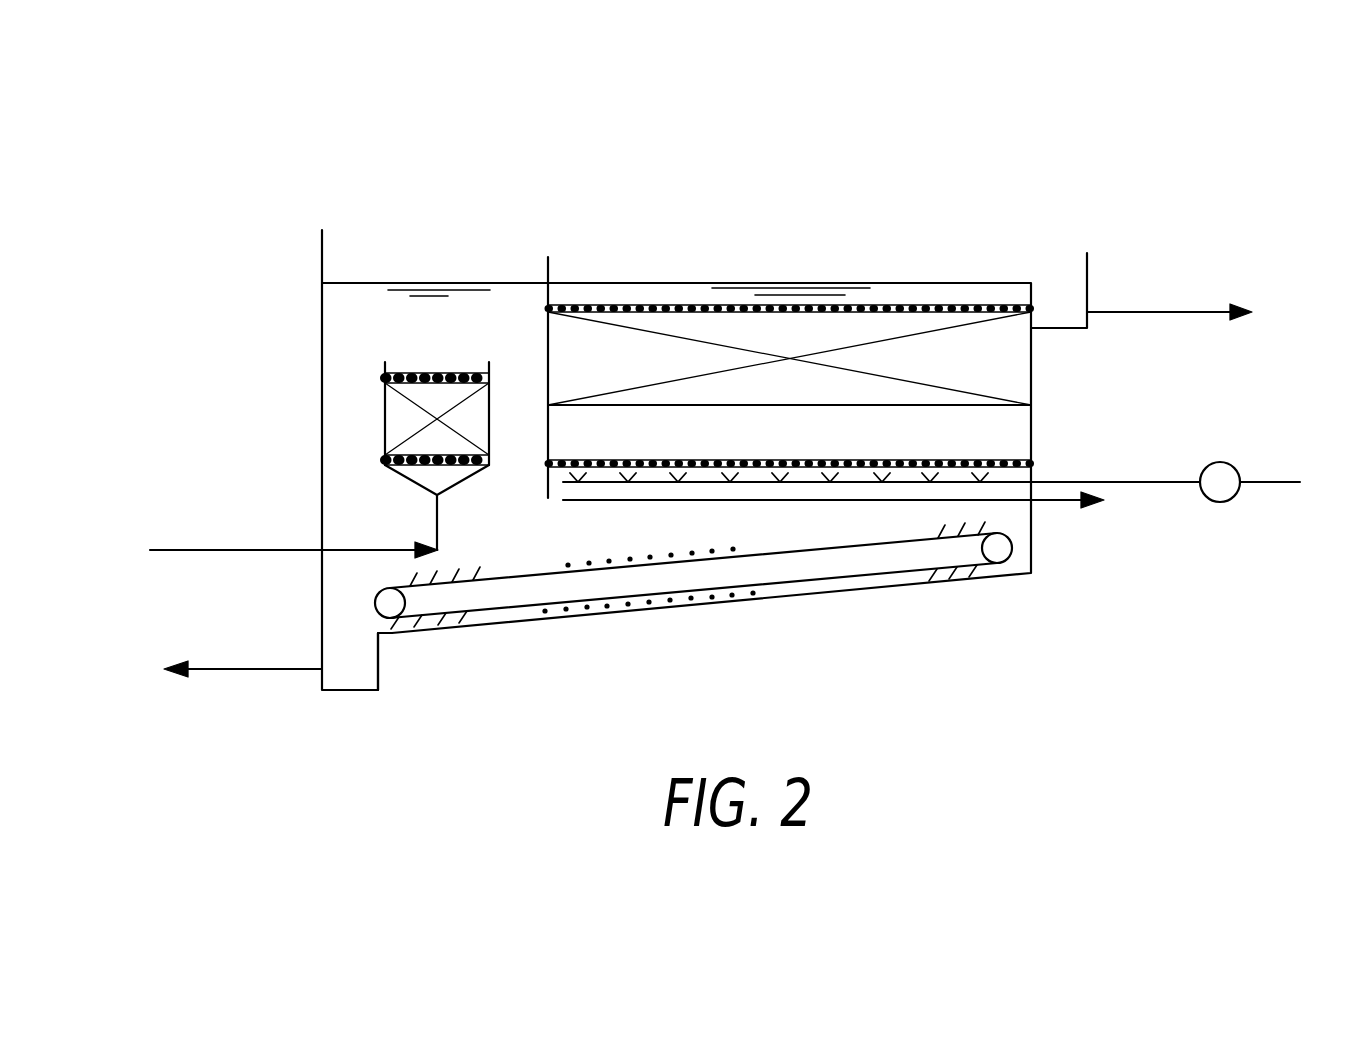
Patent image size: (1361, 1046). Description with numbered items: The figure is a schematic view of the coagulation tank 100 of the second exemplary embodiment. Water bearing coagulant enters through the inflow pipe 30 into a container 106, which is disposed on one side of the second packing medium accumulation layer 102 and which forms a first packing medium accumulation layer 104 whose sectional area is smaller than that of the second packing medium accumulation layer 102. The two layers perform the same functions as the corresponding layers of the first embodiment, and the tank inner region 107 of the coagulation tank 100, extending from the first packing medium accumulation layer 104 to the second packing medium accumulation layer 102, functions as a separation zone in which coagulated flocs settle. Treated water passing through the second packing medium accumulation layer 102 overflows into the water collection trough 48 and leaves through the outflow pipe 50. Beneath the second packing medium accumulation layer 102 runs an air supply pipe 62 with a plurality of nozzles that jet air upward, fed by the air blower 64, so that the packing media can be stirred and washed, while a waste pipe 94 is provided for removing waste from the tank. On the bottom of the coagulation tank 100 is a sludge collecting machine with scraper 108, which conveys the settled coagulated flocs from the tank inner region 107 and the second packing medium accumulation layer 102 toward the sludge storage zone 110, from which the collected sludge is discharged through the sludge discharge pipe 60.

The coagulation tank 100 is at (870, 108).
The second packing medium accumulation layer 102 is at (1000, 358).
The first packing medium accumulation layer 104 is at (403, 415).
The container 106 is at (385, 445).
The tank inner region 107 is at (517, 478).
The sludge collecting machine with scraper 108 is at (875, 583).
The sludge storage zone 110 is at (380, 652).
The inflow pipe 30 is at (245, 548).
The water collection trough 48 is at (1087, 278).
The outflow pipe 50 is at (1185, 312).
The sludge discharge pipe 60 is at (232, 672).
The air supply pipe 62 is at (1120, 480).
The air blower 64 is at (1228, 496).
The waste pipe 94 is at (1055, 505).